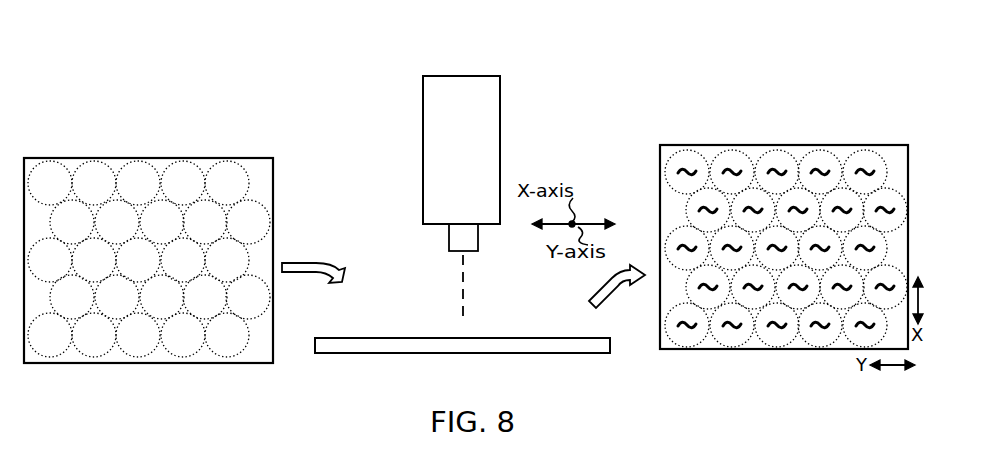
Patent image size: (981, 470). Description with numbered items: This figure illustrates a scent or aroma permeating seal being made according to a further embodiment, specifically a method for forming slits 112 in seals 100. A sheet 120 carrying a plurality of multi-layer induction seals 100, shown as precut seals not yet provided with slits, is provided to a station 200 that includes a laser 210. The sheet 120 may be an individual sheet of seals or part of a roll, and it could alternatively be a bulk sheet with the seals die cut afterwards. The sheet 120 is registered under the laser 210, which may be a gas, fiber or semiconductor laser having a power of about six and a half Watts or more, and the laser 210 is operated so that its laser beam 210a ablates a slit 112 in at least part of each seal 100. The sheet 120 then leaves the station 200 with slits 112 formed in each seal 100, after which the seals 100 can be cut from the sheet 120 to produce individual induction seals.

The multi-layer induction seal 100 is at (763, 262).
The slit 112 is at (689, 323).
The sheet 120 is at (165, 357).
The station 200 is at (476, 179).
The laser 210 is at (423, 148).
The laser beam 210a is at (464, 291).